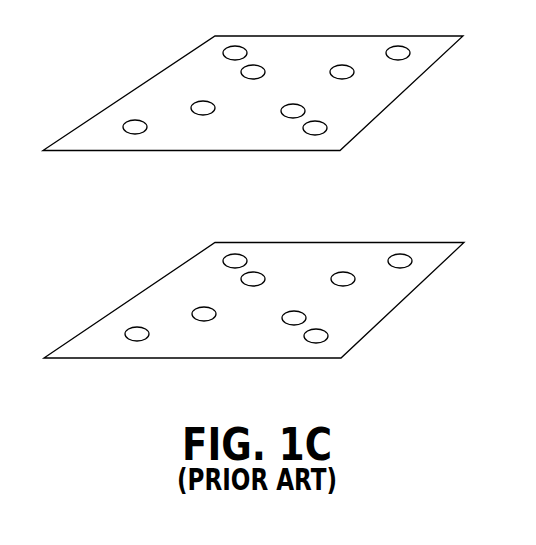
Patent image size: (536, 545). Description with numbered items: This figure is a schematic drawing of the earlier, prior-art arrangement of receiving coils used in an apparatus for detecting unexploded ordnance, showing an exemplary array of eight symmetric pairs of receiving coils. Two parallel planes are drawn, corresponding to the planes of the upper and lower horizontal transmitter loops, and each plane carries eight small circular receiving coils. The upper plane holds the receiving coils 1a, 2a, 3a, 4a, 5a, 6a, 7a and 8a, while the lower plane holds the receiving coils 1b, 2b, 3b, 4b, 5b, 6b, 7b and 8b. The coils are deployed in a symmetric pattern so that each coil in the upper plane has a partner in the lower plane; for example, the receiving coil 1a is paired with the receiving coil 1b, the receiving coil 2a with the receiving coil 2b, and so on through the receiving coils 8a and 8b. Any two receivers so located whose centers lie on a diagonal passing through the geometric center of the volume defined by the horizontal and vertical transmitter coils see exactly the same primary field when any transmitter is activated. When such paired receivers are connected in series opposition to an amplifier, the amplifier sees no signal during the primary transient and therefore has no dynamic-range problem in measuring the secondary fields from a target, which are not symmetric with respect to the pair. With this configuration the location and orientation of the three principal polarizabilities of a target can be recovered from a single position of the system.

The receiving coil 1a is at (329, 126).
The receiving coil 2a is at (150, 128).
The receiving coil 3a is at (247, 50).
The receiving coil 4a is at (411, 51).
The receiving coil 5a is at (306, 107).
The receiving coil 6a is at (217, 109).
The receiving coil 7a is at (265, 70).
The receiving coil 8a is at (357, 74).
The receiving coil 1b is at (247, 254).
The receiving coil 2b is at (412, 255).
The receiving coil 3b is at (328, 332).
The receiving coil 4b is at (149, 334).
The receiving coil 5b is at (265, 276).
The receiving coil 6b is at (356, 279).
The receiving coil 7b is at (306, 312).
The receiving coil 8b is at (216, 314).